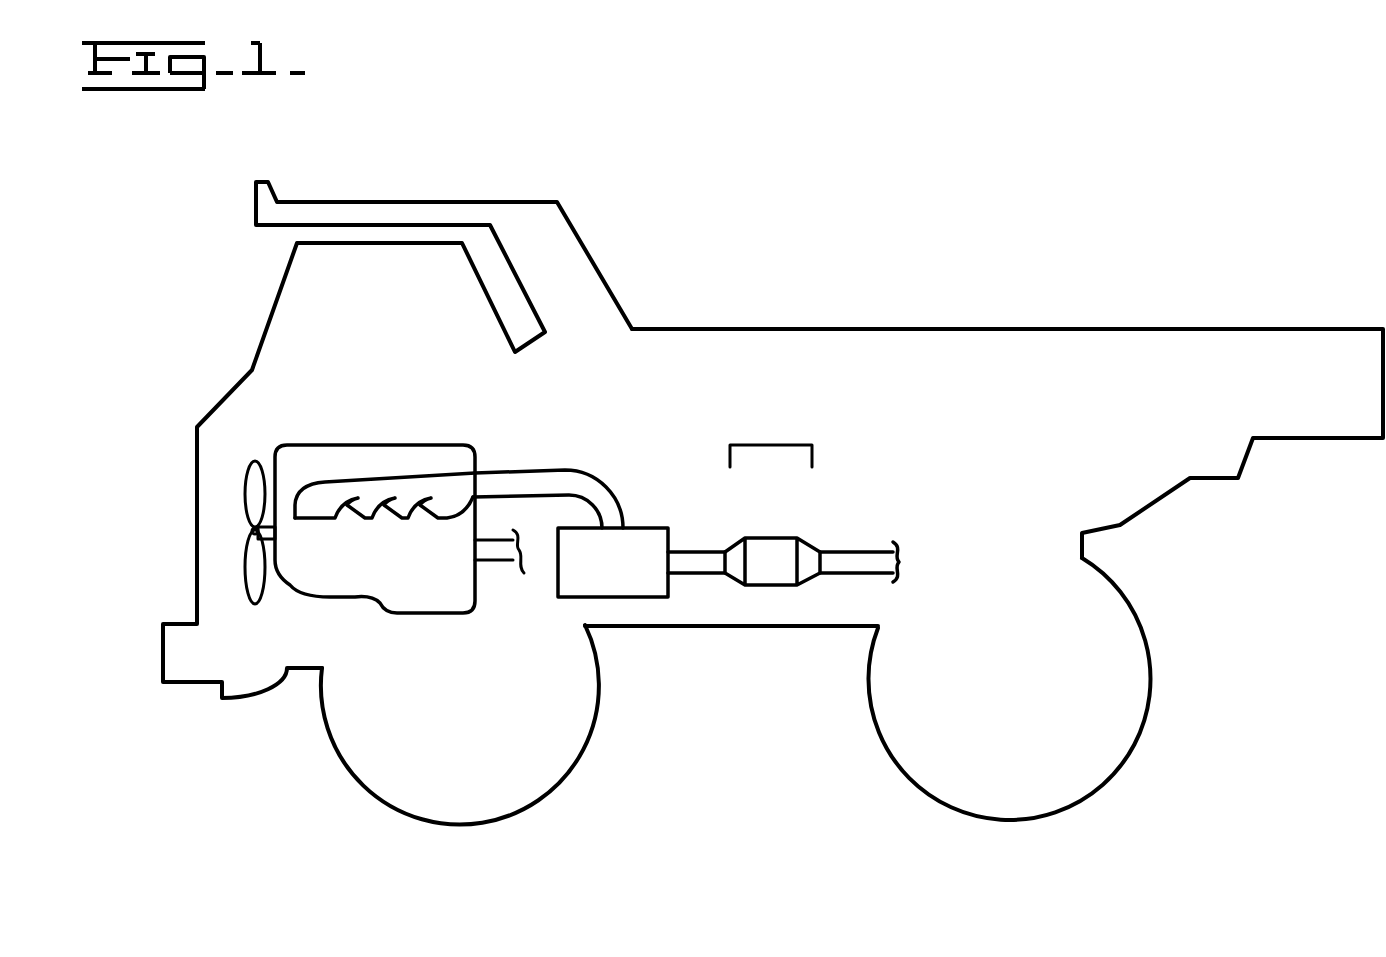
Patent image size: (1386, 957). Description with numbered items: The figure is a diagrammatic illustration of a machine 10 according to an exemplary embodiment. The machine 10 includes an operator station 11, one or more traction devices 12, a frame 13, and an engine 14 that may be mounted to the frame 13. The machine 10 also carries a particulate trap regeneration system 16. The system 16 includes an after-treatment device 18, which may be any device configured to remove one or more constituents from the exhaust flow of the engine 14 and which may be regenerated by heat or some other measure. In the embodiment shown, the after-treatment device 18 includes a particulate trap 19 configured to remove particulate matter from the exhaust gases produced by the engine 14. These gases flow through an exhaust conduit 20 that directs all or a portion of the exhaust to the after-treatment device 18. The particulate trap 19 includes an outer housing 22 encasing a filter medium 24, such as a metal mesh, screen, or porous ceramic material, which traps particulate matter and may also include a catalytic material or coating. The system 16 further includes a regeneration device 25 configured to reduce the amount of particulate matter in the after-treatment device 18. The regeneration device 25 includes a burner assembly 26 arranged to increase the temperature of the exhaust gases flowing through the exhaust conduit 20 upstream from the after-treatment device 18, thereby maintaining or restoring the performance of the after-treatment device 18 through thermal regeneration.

The machine 10 is at (824, 260).
The operator station 11 is at (359, 396).
The traction devices 12 is at (441, 756).
The frame 13 is at (708, 627).
The engine 14 is at (415, 637).
The particulate trap regeneration system 16 is at (485, 394).
The after-treatment device 18 is at (777, 503).
The particulate trap 19 is at (777, 525).
The exhaust conduit 20 is at (560, 470).
The outer housing 22 is at (799, 575).
The filter medium 24 is at (756, 571).
The regeneration device 25 is at (584, 606).
The burner assembly 26 is at (596, 579).